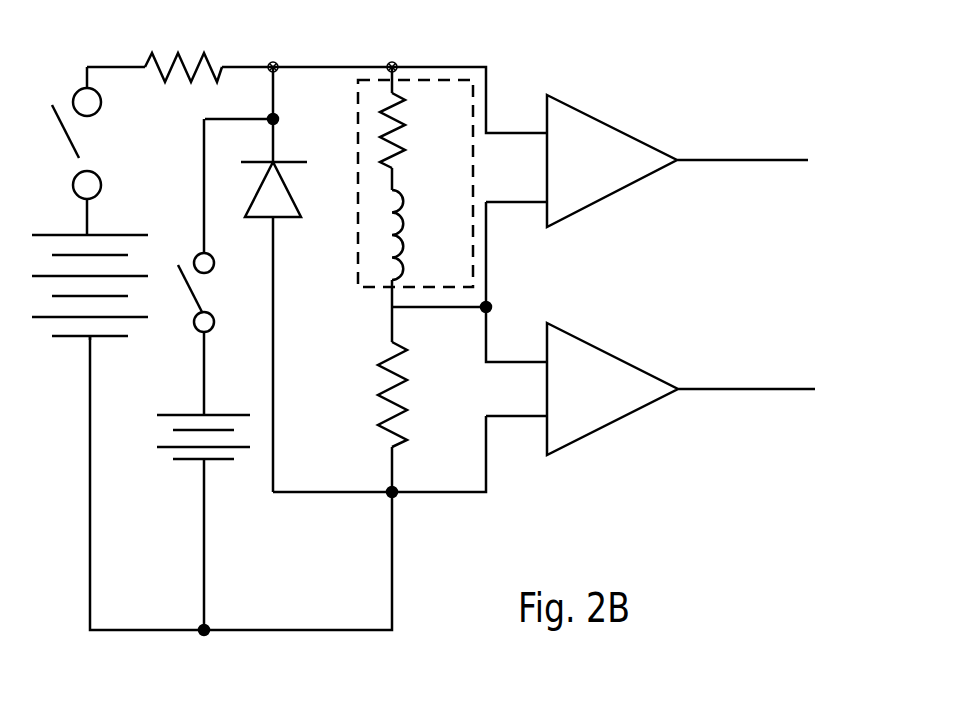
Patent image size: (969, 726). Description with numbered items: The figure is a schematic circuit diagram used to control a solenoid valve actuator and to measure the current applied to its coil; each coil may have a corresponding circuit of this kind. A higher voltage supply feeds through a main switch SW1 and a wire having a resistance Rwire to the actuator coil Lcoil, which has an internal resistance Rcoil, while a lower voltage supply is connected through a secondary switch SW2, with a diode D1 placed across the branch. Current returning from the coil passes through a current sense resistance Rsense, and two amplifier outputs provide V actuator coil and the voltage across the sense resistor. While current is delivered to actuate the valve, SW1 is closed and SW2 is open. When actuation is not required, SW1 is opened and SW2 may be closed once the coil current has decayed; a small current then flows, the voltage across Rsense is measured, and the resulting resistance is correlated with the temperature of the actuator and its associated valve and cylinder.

The wire resistance Rwire is at (147, 62).
The main switch SW1 is at (95, 153).
The diode D1 is at (262, 177).
The secondary switch SW2 is at (211, 301).
The internal resistance Rcoil is at (402, 158).
The actuator coil Lcoil is at (412, 215).
The current sense resistance Rsense is at (383, 362).
The element V actuator coil is at (583, 112).